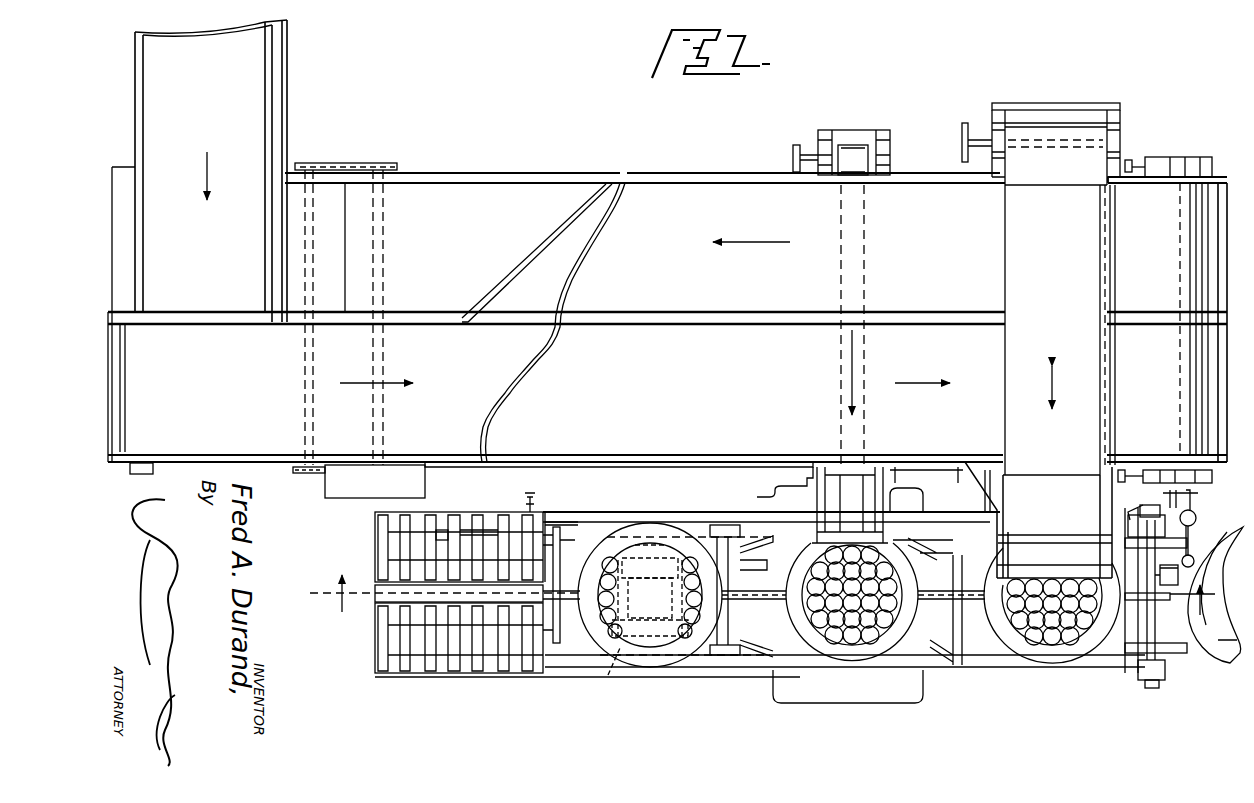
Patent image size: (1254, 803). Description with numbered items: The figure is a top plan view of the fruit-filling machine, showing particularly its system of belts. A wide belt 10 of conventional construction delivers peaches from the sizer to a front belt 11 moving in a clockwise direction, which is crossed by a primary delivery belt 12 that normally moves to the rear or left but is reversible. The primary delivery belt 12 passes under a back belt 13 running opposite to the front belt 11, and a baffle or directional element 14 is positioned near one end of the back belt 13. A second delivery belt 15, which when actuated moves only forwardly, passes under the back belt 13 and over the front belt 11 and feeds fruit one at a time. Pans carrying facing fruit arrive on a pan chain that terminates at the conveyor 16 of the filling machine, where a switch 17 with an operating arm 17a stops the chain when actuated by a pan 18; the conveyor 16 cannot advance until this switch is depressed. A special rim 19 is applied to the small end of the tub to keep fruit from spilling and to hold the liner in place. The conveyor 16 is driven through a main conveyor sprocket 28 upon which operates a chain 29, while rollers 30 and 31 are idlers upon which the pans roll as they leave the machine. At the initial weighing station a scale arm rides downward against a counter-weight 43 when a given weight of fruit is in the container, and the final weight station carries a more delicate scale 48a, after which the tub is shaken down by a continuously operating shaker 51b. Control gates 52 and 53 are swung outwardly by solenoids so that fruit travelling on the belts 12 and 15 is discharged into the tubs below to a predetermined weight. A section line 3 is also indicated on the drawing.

The wide belt 10 is at (252, 115).
The front belt 11 is at (262, 440).
The primary delivery belt 12 is at (1040, 165).
The back belt 13 is at (678, 207).
The baffle or directional element 14 is at (536, 247).
The second delivery belt 15 is at (848, 160).
The conveyor 16 is at (1142, 613).
The switch 17 is at (1150, 508).
The operating arm 17a is at (1196, 516).
The pan 18 is at (612, 614).
The special rim 19 is at (683, 643).
The main conveyor sprocket 28 is at (422, 593).
The chain 29 is at (568, 590).
The roller 30 is at (398, 538).
The roller 31 is at (407, 652).
The counter-weight 43 is at (1181, 598).
The scale 48a is at (771, 494).
The shaker 51b is at (603, 682).
The control gate 52 is at (1035, 533).
The control gate 53 is at (841, 520).
The section line 3 is at (767, 590).